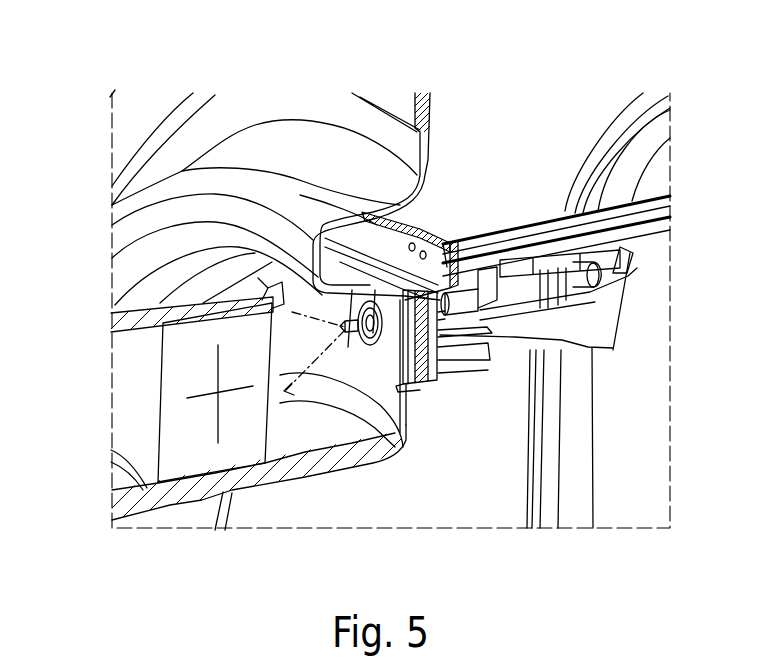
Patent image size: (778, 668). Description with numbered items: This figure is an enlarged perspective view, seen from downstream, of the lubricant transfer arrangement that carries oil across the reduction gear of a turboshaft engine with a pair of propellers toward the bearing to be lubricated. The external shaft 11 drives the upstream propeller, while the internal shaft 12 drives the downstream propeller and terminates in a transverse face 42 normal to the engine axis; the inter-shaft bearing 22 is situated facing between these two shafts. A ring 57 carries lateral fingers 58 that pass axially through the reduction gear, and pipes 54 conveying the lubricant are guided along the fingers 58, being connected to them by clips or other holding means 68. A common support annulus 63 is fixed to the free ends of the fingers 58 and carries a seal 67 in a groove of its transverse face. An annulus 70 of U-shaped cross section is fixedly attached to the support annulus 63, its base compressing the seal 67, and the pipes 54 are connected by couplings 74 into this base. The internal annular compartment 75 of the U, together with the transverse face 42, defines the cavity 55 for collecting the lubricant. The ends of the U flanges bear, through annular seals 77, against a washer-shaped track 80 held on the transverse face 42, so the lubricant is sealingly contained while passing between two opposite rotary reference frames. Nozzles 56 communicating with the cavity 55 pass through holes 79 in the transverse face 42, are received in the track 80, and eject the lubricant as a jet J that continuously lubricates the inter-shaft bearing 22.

The external shaft 11 is at (150, 318).
The internal shaft 12 is at (120, 508).
The bearing 22 is at (150, 405).
The transverse face 42 is at (408, 384).
The pipes 54 is at (633, 257).
The cavity 55 is at (457, 377).
The nozzles 56 is at (313, 237).
The ring 57 is at (672, 84).
The lateral fingers 58 is at (527, 215).
The support annulus 63 is at (427, 225).
The seal 67 is at (472, 278).
The clips or other holding means 68 is at (577, 253).
The annulus 70 is at (447, 377).
The couplings 74 is at (540, 347).
The internal annular compartment 75 is at (364, 301).
The annular seals 77 is at (410, 387).
The holes 79 is at (352, 290).
The track 80 is at (375, 290).
The jet J is at (288, 387).